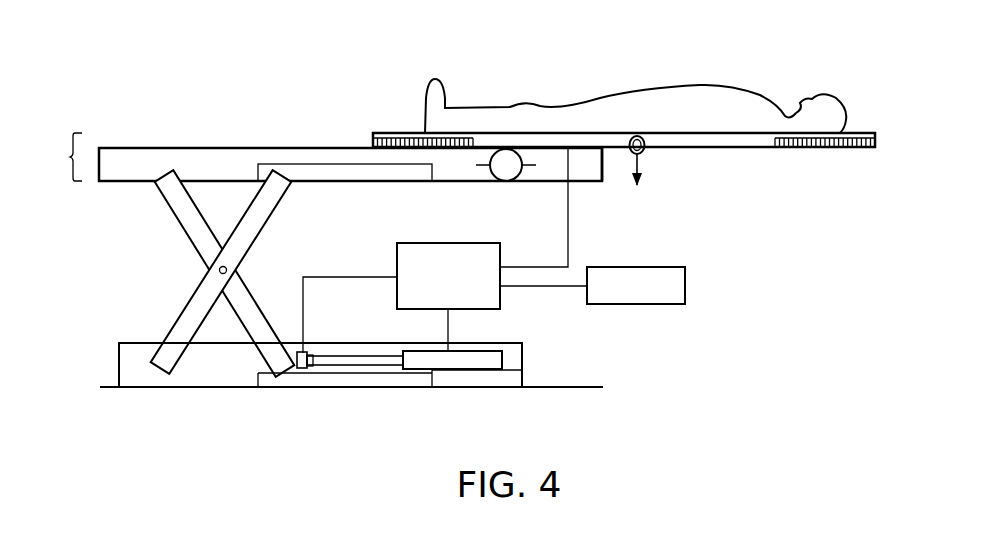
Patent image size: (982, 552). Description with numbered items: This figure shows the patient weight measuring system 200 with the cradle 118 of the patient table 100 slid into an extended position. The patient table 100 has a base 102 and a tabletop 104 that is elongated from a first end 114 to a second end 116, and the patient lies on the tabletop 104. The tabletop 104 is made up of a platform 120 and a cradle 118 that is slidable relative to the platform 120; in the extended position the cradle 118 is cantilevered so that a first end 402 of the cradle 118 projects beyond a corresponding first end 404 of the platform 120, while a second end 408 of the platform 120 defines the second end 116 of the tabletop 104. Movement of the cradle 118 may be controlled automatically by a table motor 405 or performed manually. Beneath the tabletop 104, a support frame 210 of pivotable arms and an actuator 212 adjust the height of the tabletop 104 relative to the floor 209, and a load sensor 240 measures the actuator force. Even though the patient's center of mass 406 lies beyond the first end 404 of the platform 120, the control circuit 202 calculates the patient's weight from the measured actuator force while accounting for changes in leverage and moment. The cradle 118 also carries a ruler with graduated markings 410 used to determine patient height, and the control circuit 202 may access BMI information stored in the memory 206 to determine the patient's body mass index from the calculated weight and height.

The patient table 100 is at (192, 71).
The base 102 is at (127, 357).
The tabletop 104 is at (66, 157).
The first end 114 is at (886, 138).
The second end 116 is at (90, 186).
The cradle 118 is at (393, 133).
The platform 120 is at (285, 162).
The patient weight measuring system 200 is at (714, 234).
The control circuit 202 is at (500, 298).
The memory 206 is at (641, 305).
The floor 209 is at (564, 389).
The support frame 210 is at (176, 228).
The actuator 212 is at (354, 355).
The load sensor 240 is at (300, 353).
The first end of the cradle 402 is at (878, 150).
The first end of the platform 404 is at (604, 183).
The table motor 405 is at (505, 182).
The center of mass 406 is at (648, 148).
The second end of the platform 408 is at (99, 148).
The graduated markings 410 is at (457, 153).